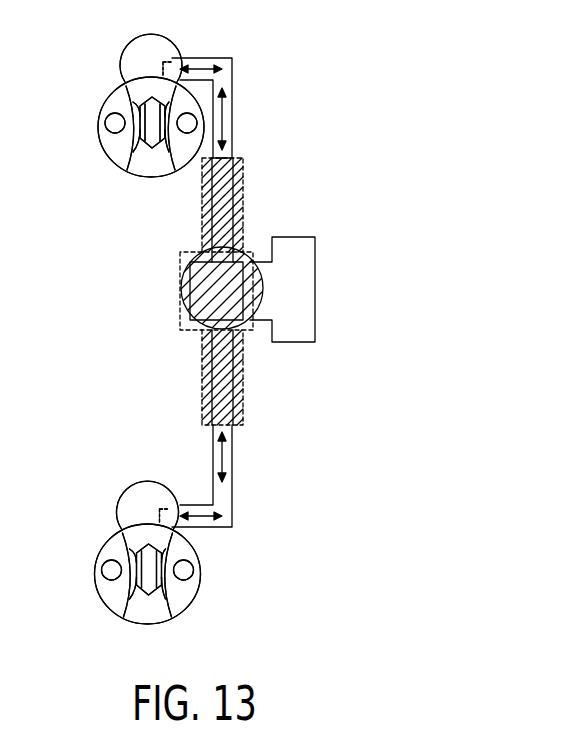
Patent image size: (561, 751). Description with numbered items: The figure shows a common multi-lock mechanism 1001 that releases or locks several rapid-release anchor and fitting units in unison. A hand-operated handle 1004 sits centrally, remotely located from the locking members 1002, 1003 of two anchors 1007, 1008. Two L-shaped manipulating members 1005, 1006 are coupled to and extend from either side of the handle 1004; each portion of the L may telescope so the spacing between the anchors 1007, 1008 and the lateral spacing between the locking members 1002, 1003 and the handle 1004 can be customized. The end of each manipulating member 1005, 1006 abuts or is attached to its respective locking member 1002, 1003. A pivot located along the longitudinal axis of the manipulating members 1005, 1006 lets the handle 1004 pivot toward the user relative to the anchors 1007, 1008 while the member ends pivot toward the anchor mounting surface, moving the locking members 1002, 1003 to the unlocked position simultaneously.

The multi-lock mechanism 1001 is at (430, 110).
The locking member 1002 is at (140, 55).
The locking member 1003 is at (128, 512).
The handle 1004 is at (300, 322).
The manipulating member 1005 is at (228, 87).
The manipulating member 1006 is at (222, 502).
The anchor 1007 is at (107, 137).
The anchor 1008 is at (108, 578).